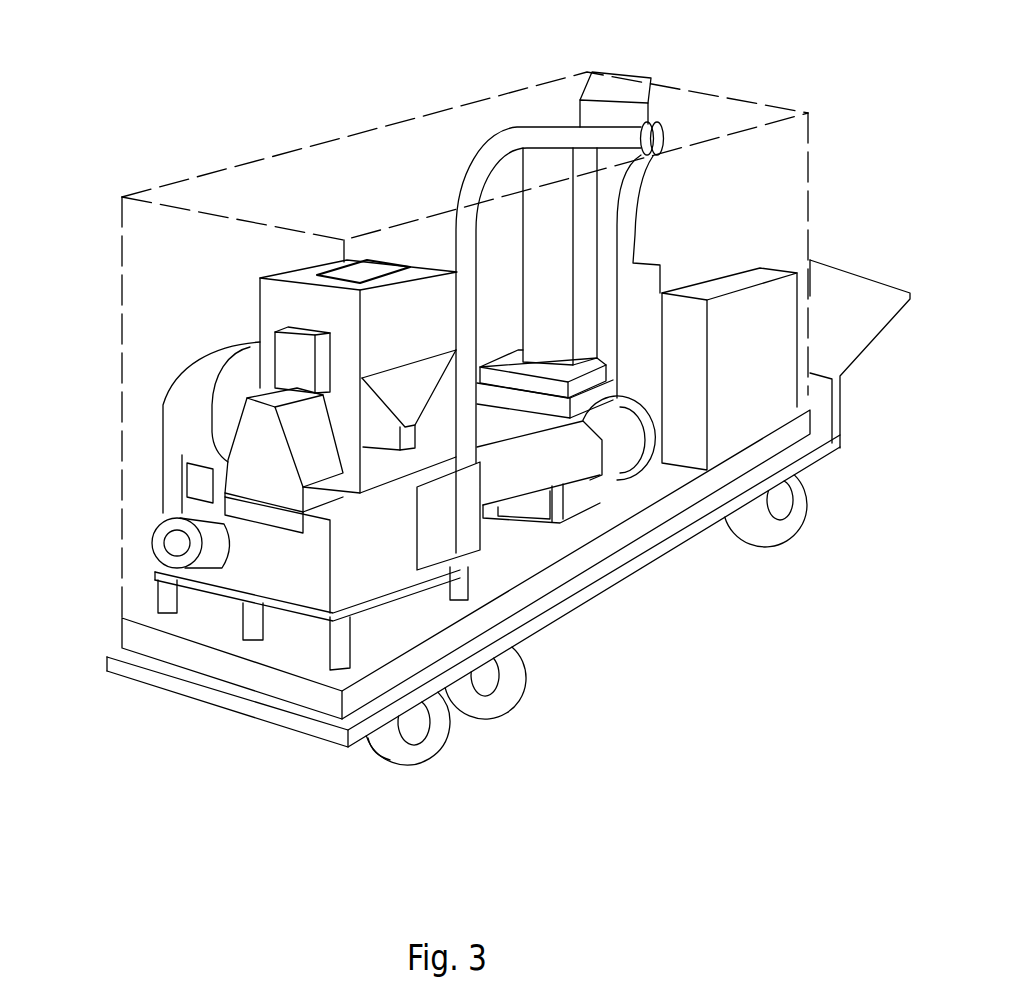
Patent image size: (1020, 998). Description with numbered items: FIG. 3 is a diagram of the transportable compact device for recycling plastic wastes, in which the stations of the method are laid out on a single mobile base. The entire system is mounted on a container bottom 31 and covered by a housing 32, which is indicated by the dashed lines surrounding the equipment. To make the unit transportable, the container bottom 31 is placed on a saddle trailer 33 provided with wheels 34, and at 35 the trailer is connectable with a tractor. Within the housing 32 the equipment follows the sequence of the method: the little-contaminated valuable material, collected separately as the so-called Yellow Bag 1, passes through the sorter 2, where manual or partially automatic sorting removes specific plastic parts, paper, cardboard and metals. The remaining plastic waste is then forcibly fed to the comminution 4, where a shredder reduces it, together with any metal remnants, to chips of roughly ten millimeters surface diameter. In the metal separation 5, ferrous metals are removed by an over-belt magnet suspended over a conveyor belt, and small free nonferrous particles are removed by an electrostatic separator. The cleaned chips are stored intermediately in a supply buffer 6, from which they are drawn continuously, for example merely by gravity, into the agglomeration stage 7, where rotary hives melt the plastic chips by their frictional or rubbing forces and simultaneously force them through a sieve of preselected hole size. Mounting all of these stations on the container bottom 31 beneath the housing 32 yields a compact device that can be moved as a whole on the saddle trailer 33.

The Yellow Bag 1 is at (267, 291).
The sorter 2 is at (250, 437).
The comminution 4 is at (547, 170).
The metal separation 5 is at (600, 470).
The supply buffer 6 is at (663, 138).
The agglomeration stage 7 is at (647, 320).
The container bottom 31 is at (121, 620).
The housing 32 is at (121, 268).
The saddle trailer 33 is at (190, 700).
The wheels 34 is at (372, 745).
The tractor connection 35 is at (873, 348).